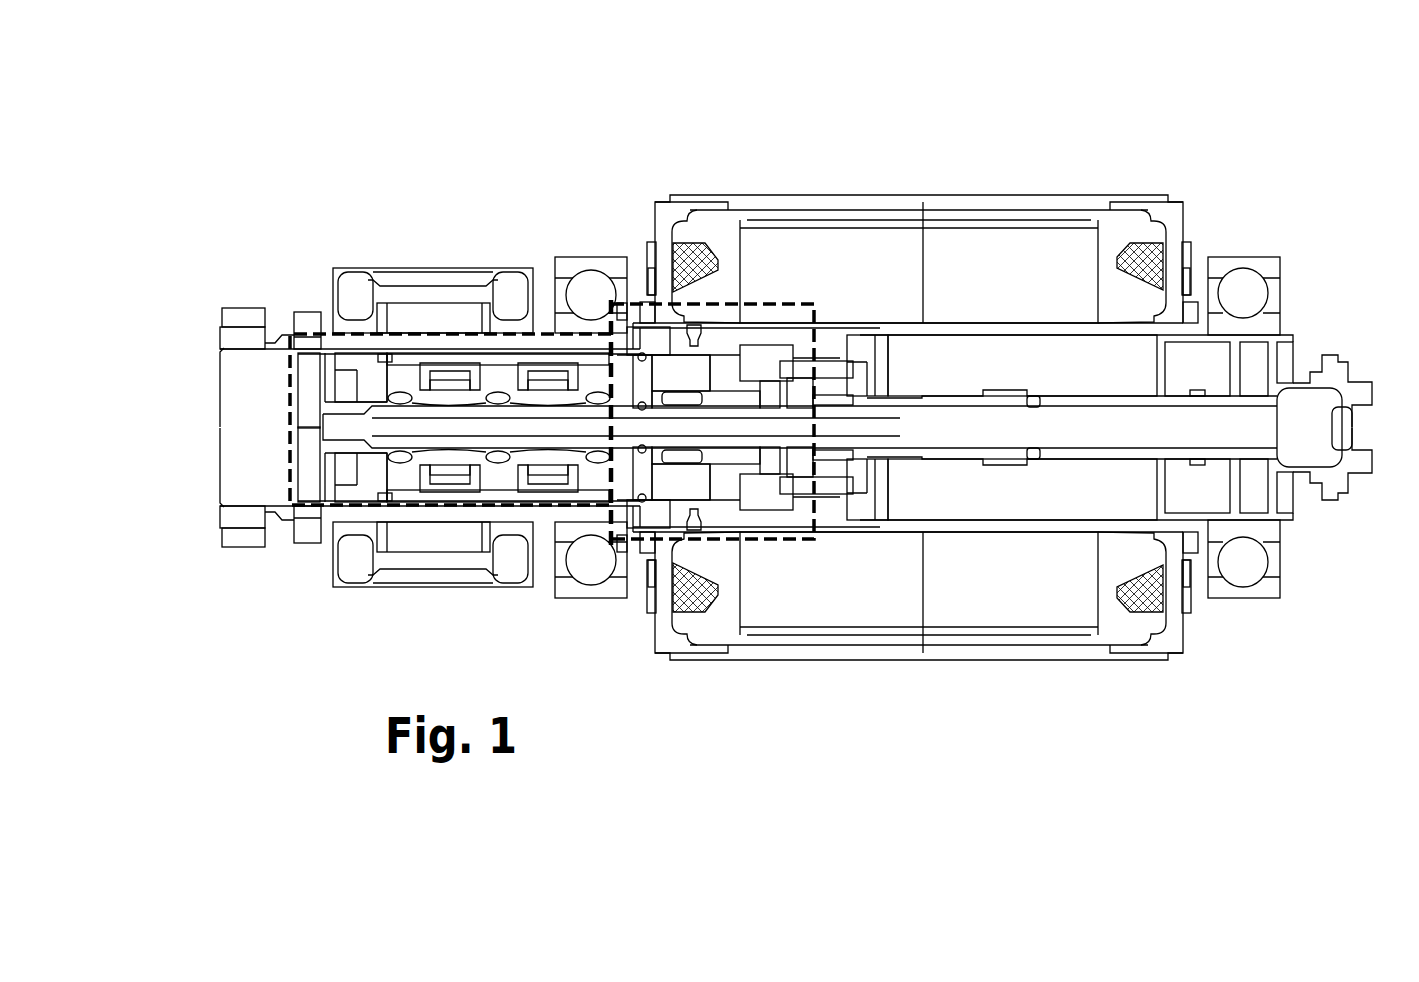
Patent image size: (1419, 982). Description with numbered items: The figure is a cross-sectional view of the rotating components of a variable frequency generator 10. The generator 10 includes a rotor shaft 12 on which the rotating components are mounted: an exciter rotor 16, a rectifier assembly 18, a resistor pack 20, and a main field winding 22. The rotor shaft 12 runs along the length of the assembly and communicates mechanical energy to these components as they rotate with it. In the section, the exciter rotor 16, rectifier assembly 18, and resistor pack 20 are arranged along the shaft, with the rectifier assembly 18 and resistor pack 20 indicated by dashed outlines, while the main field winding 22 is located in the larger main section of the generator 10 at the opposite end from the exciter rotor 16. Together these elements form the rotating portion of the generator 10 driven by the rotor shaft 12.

The generator 10 is at (1082, 98).
The rotor shaft 12 is at (214, 370).
The exciter rotor 16 is at (335, 258).
The rectifier assembly 18 is at (288, 447).
The resistor pack 20 is at (796, 297).
The main field winding 22 is at (1166, 256).